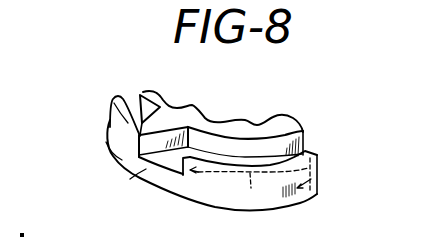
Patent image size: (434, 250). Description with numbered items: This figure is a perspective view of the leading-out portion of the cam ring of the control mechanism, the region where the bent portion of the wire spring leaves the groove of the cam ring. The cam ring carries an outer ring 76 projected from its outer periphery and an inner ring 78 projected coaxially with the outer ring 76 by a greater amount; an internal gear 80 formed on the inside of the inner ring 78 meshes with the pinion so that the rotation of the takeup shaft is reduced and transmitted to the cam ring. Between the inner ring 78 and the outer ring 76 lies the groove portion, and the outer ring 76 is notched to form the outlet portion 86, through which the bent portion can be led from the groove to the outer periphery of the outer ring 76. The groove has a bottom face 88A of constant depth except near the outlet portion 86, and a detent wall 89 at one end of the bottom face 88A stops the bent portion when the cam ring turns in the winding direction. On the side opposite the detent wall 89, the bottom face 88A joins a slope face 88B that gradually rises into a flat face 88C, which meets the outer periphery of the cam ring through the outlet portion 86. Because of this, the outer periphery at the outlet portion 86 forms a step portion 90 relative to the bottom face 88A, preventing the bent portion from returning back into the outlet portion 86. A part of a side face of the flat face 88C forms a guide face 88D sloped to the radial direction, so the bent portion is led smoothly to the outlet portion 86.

The outer ring 76 is at (252, 187).
The inner ring 78 is at (255, 123).
The internal gear 80 is at (187, 108).
The outlet portion 86 is at (161, 170).
The bottom face 88A is at (220, 181).
The slope face 88B is at (214, 174).
The flat face 88C is at (130, 179).
The guide face 88D is at (132, 148).
The detent wall 89 is at (110, 118).
The step portion 90 is at (176, 176).